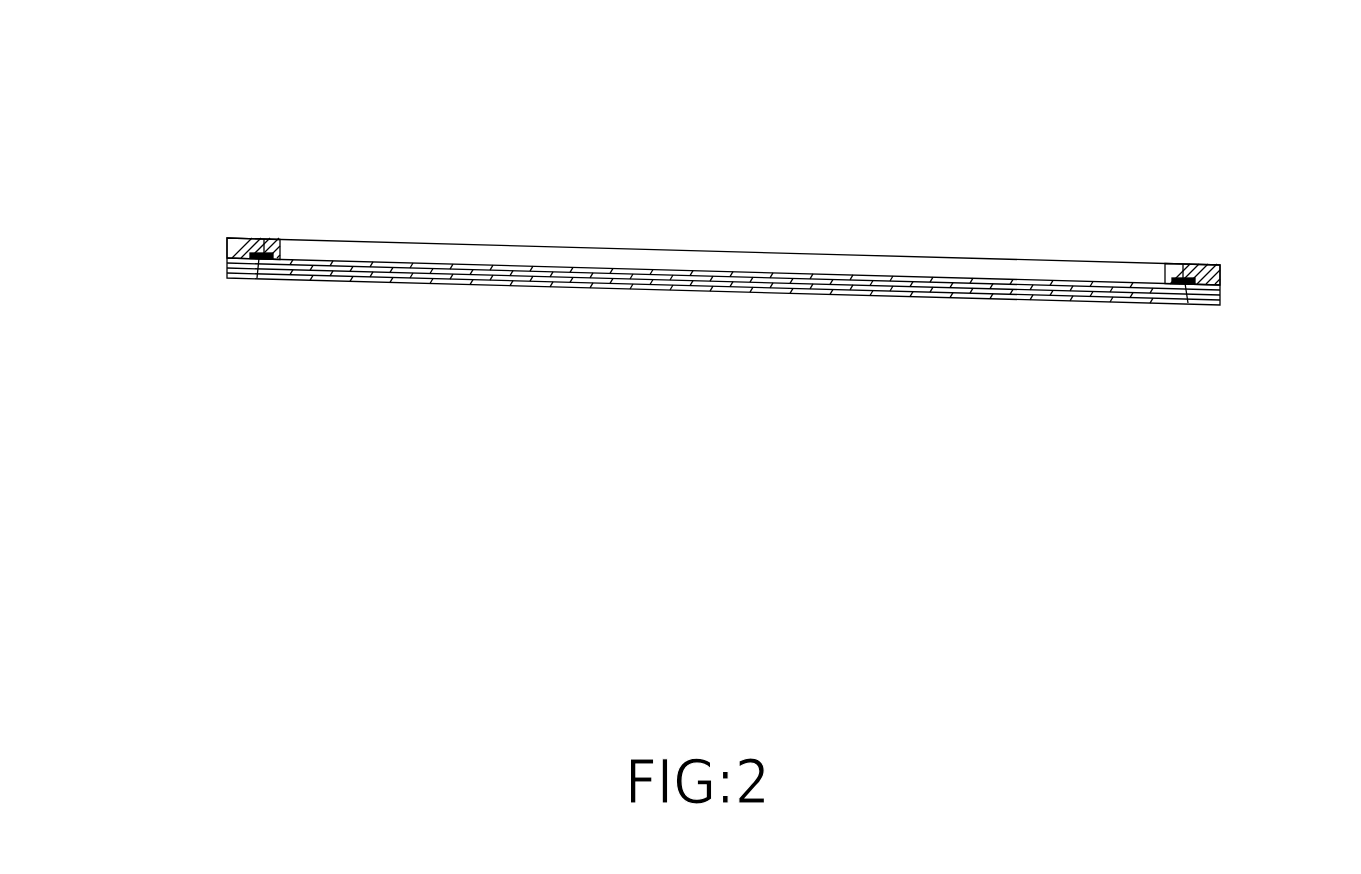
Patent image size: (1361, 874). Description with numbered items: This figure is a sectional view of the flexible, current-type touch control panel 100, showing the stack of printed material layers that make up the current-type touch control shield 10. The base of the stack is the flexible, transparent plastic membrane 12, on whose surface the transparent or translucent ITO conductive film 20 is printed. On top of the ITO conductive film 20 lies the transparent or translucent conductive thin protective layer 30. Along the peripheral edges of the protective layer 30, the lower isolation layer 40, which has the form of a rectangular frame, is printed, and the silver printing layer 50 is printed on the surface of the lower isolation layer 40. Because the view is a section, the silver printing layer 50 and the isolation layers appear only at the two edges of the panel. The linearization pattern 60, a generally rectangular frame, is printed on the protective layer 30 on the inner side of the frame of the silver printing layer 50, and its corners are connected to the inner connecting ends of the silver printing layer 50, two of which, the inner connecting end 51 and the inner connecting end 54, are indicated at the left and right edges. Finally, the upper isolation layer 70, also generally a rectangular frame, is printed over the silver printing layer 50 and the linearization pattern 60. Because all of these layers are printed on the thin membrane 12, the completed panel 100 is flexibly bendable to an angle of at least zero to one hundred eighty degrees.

The flexible current-type touch control panel 100 is at (809, 175).
The current-type touch control shield 10 is at (637, 242).
The flexible transparent plastic membrane 12 is at (376, 277).
The ITO conductive film 20 is at (443, 270).
The conductive thin protective layer 30 is at (545, 272).
The lower isolation layer 40 is at (250, 256).
The silver printing layer 50 is at (238, 238).
The inner connecting end 51 is at (264, 239).
The inner connecting end 54 is at (1183, 264).
The linearization pattern 60 is at (257, 278).
The upper isolation layer 70 is at (270, 247).